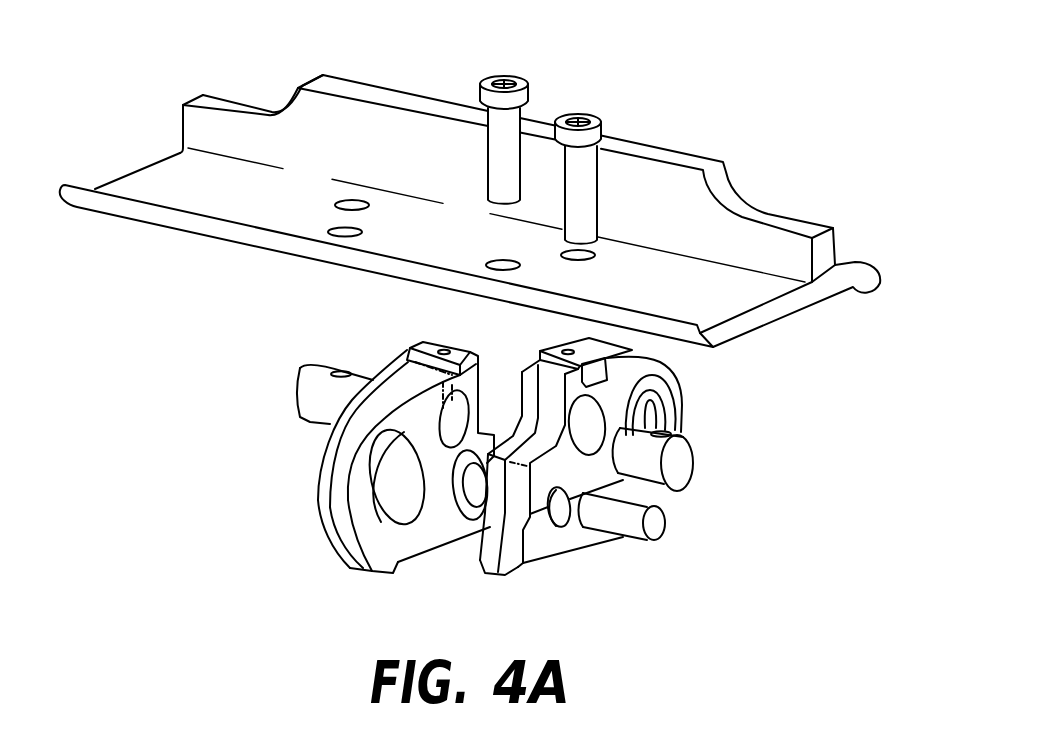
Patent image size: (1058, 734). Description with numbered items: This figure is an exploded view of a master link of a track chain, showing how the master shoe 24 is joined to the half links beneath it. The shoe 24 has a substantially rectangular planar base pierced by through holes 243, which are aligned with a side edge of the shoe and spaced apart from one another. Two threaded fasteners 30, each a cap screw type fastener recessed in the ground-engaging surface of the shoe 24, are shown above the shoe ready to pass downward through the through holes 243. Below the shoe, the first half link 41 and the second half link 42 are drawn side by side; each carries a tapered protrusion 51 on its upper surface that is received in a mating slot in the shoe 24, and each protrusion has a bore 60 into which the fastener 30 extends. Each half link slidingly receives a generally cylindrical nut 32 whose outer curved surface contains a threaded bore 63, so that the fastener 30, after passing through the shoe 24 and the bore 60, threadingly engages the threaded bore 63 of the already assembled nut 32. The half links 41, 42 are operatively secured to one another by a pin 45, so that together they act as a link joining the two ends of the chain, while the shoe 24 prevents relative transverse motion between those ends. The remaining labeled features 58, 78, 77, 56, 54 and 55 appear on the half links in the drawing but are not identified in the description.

The shoe 24 is at (861, 235).
The threaded fastener 30 is at (503, 76).
The through hole 243 is at (348, 199).
The half link 42 is at (306, 527).
The half link 41 is at (611, 557).
The tapered protrusion 51 is at (408, 352).
The bore 60 is at (445, 349).
The threaded bore 63 is at (340, 371).
The cylindrical nut 32 is at (307, 395).
The pin 45 is at (654, 535).
The bore 58 is at (648, 402).
The bore 78 is at (373, 472).
The recess 77 is at (447, 435).
The hole 56 is at (470, 498).
The foot 54 is at (360, 570).
The foot edge 55 is at (333, 552).